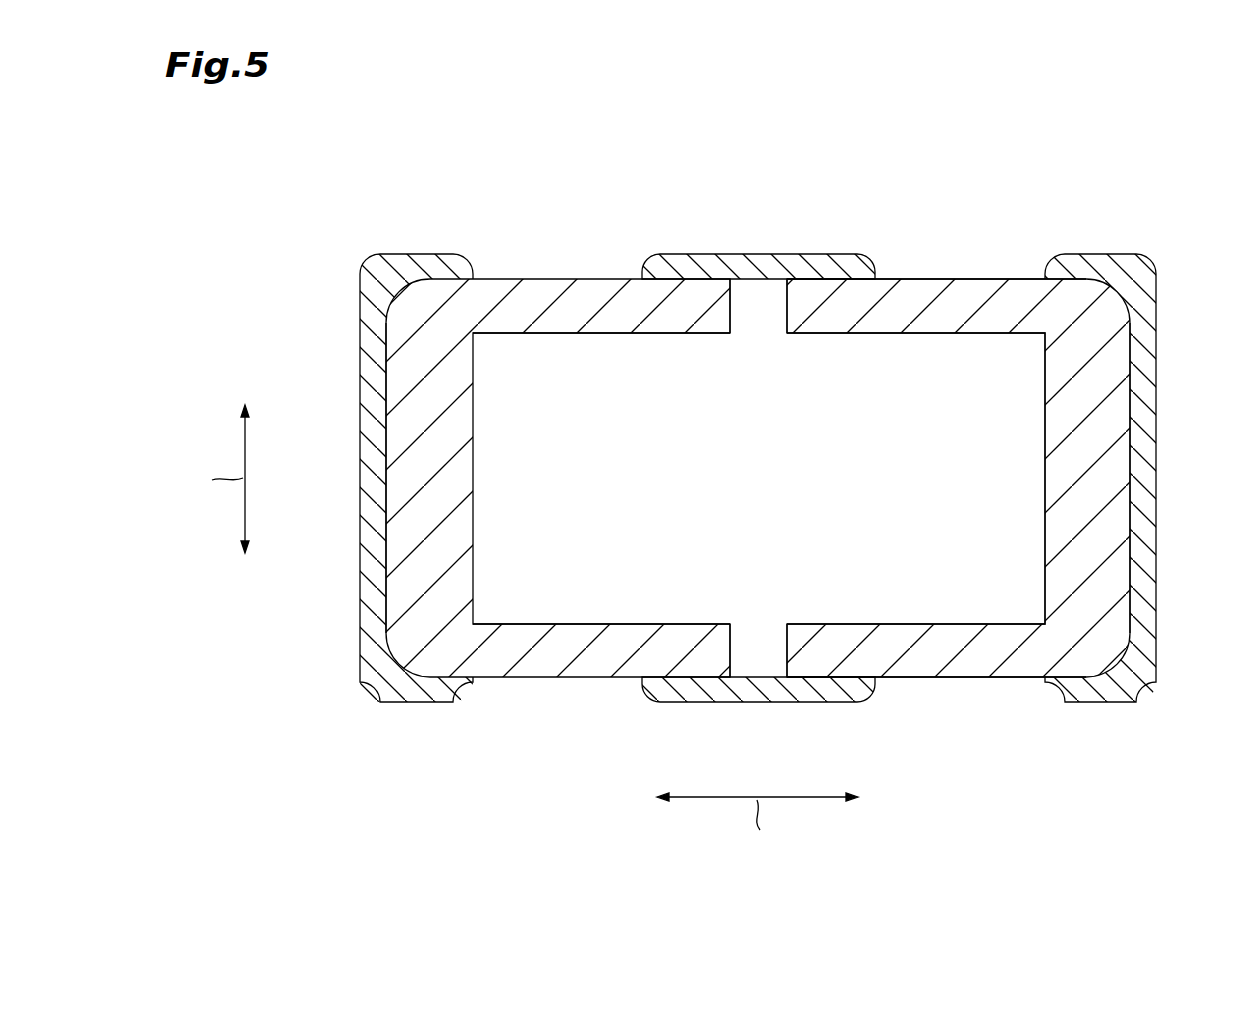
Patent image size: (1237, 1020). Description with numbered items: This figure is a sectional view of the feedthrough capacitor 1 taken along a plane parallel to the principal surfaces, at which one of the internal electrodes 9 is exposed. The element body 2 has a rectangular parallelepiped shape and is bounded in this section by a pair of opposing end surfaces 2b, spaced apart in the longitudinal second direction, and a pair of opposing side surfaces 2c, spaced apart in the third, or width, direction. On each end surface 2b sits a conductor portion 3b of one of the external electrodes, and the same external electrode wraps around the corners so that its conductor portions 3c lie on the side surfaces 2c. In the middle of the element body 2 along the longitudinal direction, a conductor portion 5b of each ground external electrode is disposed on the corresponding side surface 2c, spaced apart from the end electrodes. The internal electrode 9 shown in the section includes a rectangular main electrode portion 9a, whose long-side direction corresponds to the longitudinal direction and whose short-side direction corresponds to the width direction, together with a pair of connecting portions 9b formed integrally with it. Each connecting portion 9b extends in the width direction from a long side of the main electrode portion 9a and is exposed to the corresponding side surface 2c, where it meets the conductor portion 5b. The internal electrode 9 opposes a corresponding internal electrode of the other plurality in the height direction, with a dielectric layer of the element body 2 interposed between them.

The feedthrough capacitor 1 is at (805, 142).
The element body 2 is at (600, 279).
The end surface 2b is at (386, 408).
The side surface 2c is at (930, 279).
The conductor portion 3b is at (360, 362).
The conductor portion 3c is at (425, 254).
The conductor portion 5b is at (710, 254).
The internal electrode 9 is at (600, 627).
The main electrode portion 9a is at (950, 483).
The connecting portion 9b is at (758, 306).